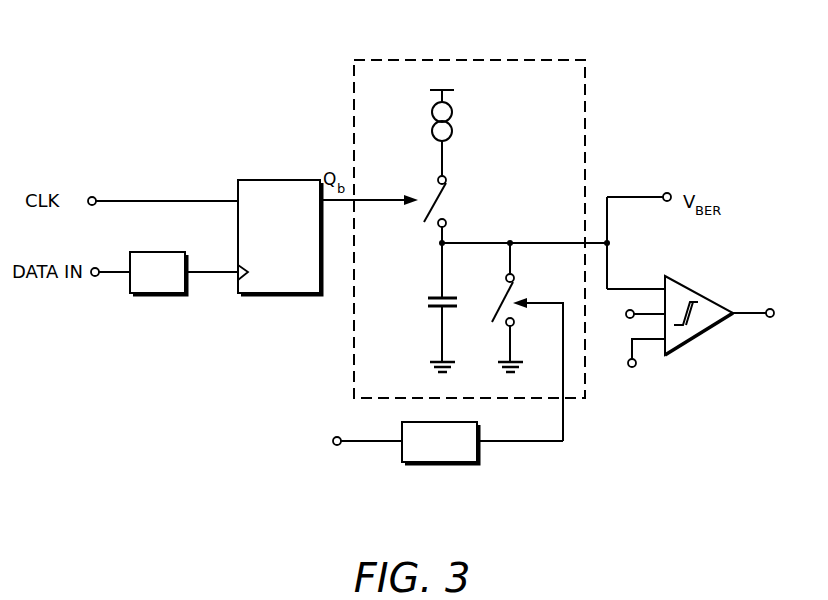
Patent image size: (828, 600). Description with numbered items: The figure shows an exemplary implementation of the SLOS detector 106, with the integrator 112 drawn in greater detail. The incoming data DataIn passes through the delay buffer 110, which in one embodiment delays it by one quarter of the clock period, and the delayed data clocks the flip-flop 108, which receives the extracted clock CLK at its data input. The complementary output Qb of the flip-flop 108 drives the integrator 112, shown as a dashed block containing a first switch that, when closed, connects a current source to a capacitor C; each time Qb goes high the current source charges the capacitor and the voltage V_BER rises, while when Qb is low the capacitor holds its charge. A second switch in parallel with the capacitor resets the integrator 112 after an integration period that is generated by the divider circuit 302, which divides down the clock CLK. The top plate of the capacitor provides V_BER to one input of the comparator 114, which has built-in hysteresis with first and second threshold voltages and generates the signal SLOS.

The SLOS detector 106 is at (678, 90).
The flip-flop 108 is at (279, 179).
The delay buffer 110 is at (157, 297).
The integrator 112 is at (470, 60).
The comparator 114 is at (700, 297).
The divider circuit 302 is at (440, 465).